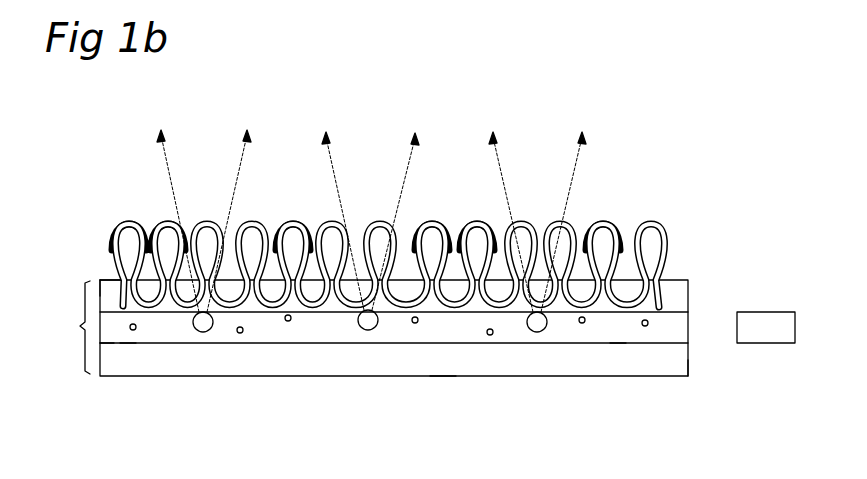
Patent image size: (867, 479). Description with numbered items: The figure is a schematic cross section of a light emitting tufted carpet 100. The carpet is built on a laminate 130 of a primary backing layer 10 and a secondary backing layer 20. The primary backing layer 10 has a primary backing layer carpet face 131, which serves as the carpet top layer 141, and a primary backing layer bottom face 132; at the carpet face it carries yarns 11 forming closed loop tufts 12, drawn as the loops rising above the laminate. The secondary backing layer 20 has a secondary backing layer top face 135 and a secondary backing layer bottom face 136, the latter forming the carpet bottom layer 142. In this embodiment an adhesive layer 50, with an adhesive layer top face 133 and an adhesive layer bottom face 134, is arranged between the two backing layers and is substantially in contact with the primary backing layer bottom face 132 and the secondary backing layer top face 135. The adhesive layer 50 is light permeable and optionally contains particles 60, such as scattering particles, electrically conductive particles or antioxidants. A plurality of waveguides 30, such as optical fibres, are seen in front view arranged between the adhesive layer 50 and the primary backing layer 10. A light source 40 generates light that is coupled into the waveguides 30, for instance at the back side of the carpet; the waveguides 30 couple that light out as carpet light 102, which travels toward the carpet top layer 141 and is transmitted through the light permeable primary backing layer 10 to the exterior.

The light emitting tufted carpet 100 is at (111, 214).
The primary backing layer 10 is at (683, 290).
The yarns 11 is at (297, 222).
The tufts 12 is at (165, 222).
The secondary backing layer 20 is at (170, 360).
The waveguide 30 is at (204, 333).
The light source 40 is at (758, 330).
The adhesive layer 50 is at (333, 337).
The particles 60 is at (240, 333).
The carpet light 102 is at (165, 152).
The laminate 130 is at (67, 327).
The primary backing layer carpet face 131 is at (112, 275).
The primary backing layer bottom face 132 is at (100, 280).
The adhesive layer top face 133 is at (113, 345).
The adhesive layer bottom face 134 is at (128, 347).
The secondary backing layer top face 135 is at (618, 345).
The secondary backing layer bottom face 136 is at (443, 377).
The carpet top layer 141 is at (680, 268).
The carpet bottom layer 142 is at (684, 378).